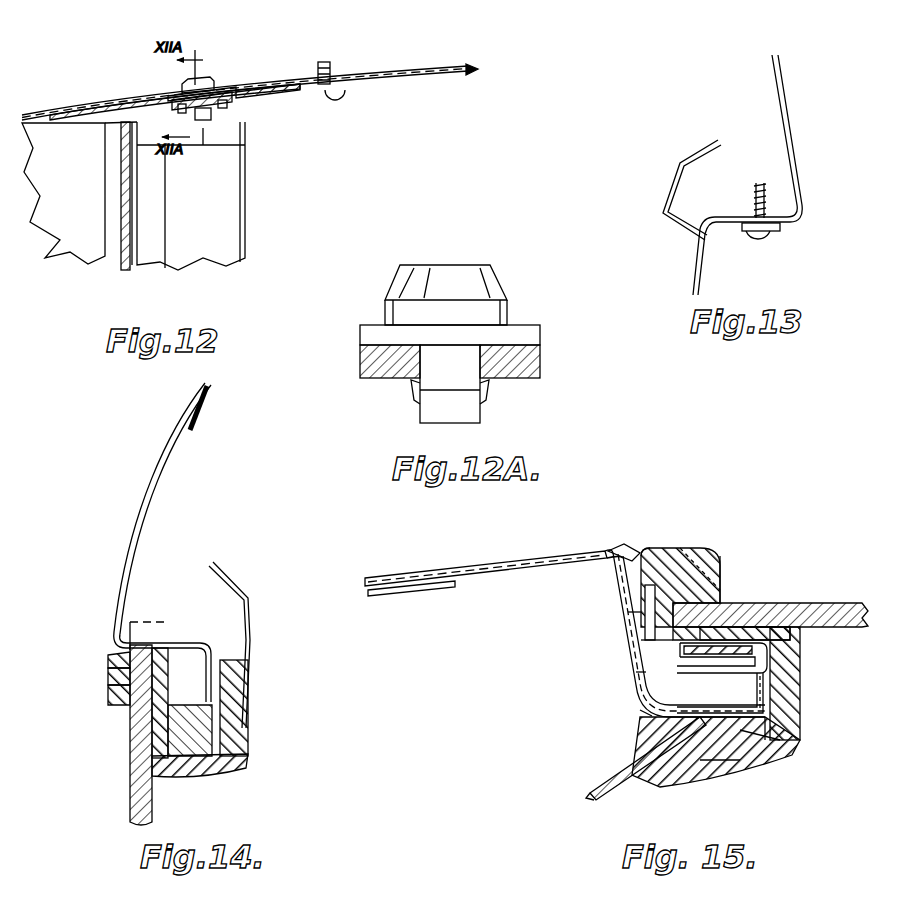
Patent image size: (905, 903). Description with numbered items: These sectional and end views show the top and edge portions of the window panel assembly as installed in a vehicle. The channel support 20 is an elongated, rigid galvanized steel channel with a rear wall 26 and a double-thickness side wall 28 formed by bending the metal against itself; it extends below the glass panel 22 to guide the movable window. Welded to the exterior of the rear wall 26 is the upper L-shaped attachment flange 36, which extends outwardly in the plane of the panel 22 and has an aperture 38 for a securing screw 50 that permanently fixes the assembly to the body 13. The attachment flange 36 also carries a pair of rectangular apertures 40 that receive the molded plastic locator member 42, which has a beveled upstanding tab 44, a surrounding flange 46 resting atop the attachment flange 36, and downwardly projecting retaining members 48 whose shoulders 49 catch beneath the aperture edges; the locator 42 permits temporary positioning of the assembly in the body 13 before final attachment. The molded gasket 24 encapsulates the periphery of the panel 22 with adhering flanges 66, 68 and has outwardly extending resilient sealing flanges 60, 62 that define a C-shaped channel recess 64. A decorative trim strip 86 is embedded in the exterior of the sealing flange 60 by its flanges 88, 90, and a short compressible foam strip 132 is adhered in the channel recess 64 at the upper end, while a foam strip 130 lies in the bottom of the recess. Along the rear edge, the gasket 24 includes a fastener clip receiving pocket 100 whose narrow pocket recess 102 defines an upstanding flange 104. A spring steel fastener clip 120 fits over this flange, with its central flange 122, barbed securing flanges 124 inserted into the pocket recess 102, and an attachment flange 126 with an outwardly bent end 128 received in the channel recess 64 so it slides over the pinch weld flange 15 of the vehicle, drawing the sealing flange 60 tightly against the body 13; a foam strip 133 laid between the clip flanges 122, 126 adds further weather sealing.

In FIG. 12, the vehicle body 13 is at (441, 74).
In FIG. 13, the vehicle body 13 is at (702, 148).
In FIG. 14, the vehicle body 13 is at (154, 478).
In FIG. 15, the vehicle body 13 is at (470, 570).
In FIG. 14, the pinch weld flange 15 is at (250, 672).
In FIG. 15, the pinch weld flange 15 is at (790, 722).
In FIG. 12, the channel support 20 is at (182, 264).
In FIG. 12, the panel 22 is at (86, 160).
In FIG. 14, the panel 22 is at (152, 800).
In FIG. 15, the panel 22 is at (796, 604).
In FIG. 12, the gasket 24 is at (110, 104).
In FIG. 12, the rear wall 26 is at (128, 262).
In FIG. 12, the side wall 28 is at (210, 220).
In FIG. 12, the attachment flange 36 is at (300, 96).
In FIG. 12A, the attachment flange 36 is at (530, 368).
In FIG. 13, the attachment flange 36 is at (782, 228).
In FIG. 12, the aperture 38 is at (344, 82).
In FIG. 13, the aperture 38 is at (756, 242).
In FIG. 12, the rectangular apertures 40 is at (163, 100).
In FIG. 12A, the rectangular apertures 40 is at (470, 362).
In FIG. 12, the locator member 42 is at (234, 76).
In FIG. 12A, the locator member 42 is at (514, 252).
In FIG. 12, the upstanding tab 44 is at (205, 80).
In FIG. 12A, the upstanding tab 44 is at (440, 266).
In FIG. 12, the flange 46 is at (224, 88).
In FIG. 12A, the flange 46 is at (520, 332).
In FIG. 12, the retaining members 48 is at (212, 118).
In FIG. 12A, the retaining members 48 is at (455, 406).
In FIG. 12A, the shoulders 49 is at (410, 390).
In FIG. 12, the securing screw 50 is at (324, 60).
In FIG. 13, the securing screw 50 is at (758, 182).
In FIG. 14, the sealing flange 60 is at (108, 656).
In FIG. 15, the sealing flange 60 is at (626, 546).
In FIG. 14, the sealing flange 62 is at (250, 690).
In FIG. 15, the sealing flange 62 is at (630, 776).
In FIG. 14, the channel recess 64 is at (205, 760).
In FIG. 15, the channel recess 64 is at (802, 692).
In FIG. 14, the adhering flange 66 is at (110, 702).
In FIG. 15, the adhering flange 66 is at (722, 560).
In FIG. 14, the adhering flange 68 is at (154, 748).
In FIG. 15, the adhering flange 68 is at (800, 664).
In FIG. 14, the trim strip 86 is at (108, 672).
In FIG. 15, the trim strip 86 is at (674, 548).
In FIG. 15, the lip 88 is at (650, 548).
In FIG. 15, the trim strip flange 90 is at (692, 560).
In FIG. 15, the fastener clip receiving pocket 100 is at (668, 640).
In FIG. 15, the pocket recess 102 is at (746, 614).
In FIG. 15, the upstanding flange 104 is at (638, 676).
In FIG. 15, the fastener clip 120 is at (668, 658).
In FIG. 15, the central flange 122 is at (705, 682).
In FIG. 15, the securing flanges 124 is at (792, 640).
In FIG. 15, the attachment flange 126 is at (736, 732).
In FIG. 15, the outer end 128 is at (702, 762).
In FIG. 14, the barbs 130 is at (214, 716).
In FIG. 15, the barbs 130 is at (628, 612).
In FIG. 14, the foam strip 132 is at (176, 660).
In FIG. 15, the foam strips 133 is at (646, 714).